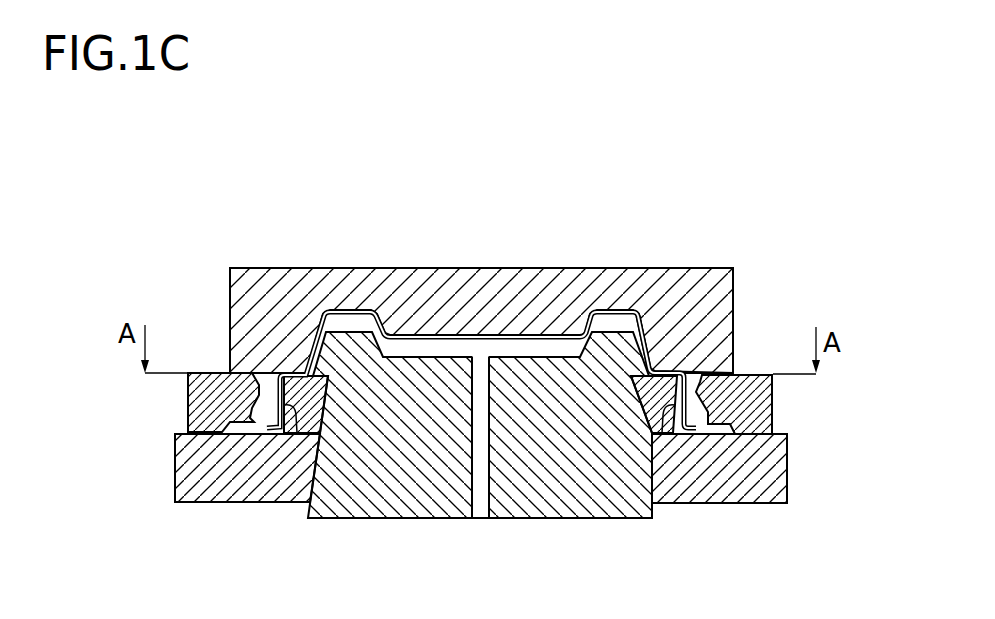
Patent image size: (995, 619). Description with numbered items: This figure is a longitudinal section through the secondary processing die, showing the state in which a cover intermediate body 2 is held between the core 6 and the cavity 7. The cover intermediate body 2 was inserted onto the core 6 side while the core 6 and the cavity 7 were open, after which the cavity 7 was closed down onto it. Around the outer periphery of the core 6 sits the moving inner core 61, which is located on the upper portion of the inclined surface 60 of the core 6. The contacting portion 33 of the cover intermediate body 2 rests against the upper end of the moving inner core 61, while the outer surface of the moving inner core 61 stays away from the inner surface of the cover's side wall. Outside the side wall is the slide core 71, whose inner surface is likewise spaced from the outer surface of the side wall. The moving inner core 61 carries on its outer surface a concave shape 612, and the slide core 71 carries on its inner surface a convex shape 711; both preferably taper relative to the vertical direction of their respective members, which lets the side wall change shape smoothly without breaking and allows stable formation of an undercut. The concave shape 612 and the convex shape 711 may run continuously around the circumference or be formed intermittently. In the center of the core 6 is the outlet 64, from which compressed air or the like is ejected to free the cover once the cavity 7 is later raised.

The cover intermediate body 2 is at (402, 334).
The contacting portion 33 is at (660, 336).
The cavity 7 is at (672, 284).
The convex shape 711 is at (695, 355).
The slide core 71 is at (764, 416).
The core 6 is at (407, 497).
The outlet 64 is at (478, 483).
The inclined surface 60 is at (652, 436).
The moving inner core 61 is at (665, 423).
The concave shape 612 is at (300, 414).